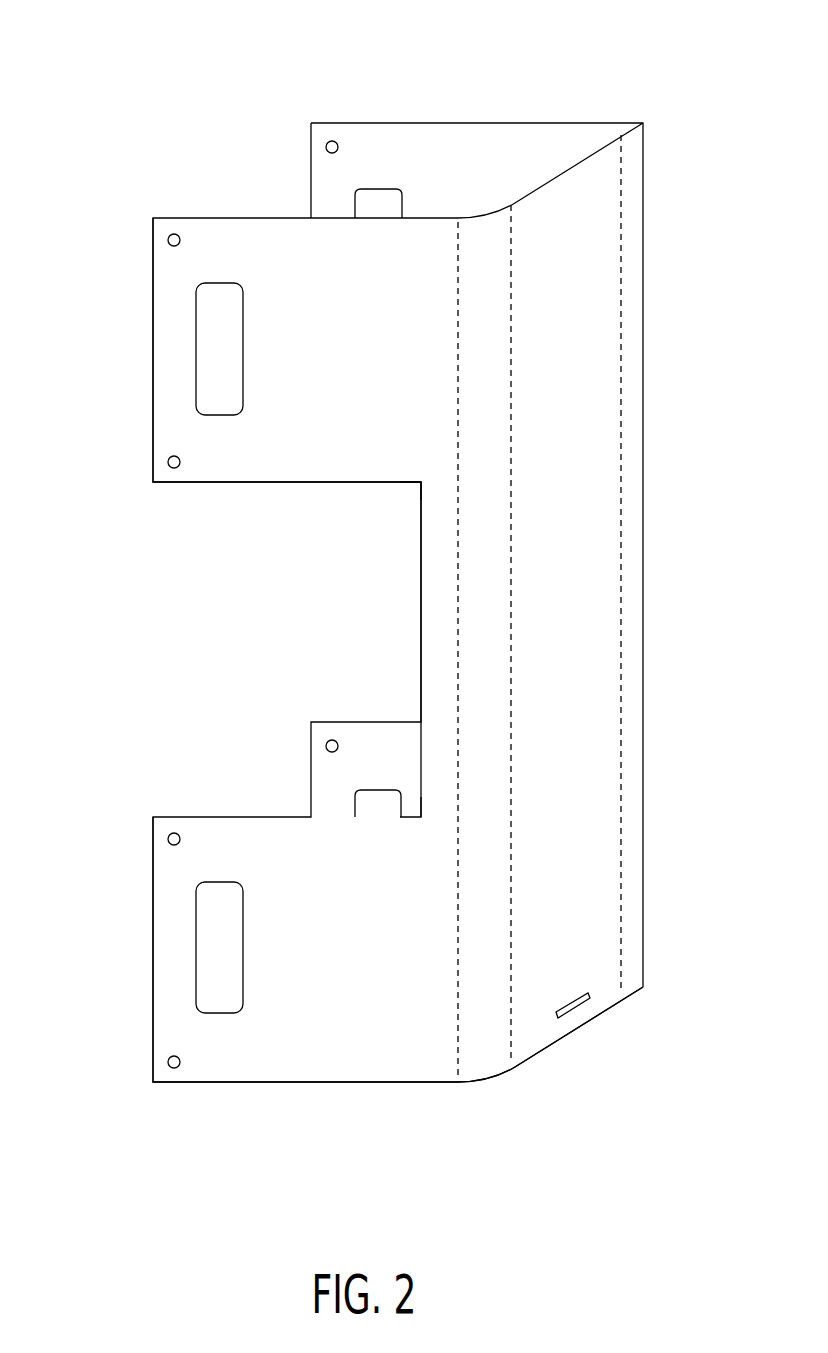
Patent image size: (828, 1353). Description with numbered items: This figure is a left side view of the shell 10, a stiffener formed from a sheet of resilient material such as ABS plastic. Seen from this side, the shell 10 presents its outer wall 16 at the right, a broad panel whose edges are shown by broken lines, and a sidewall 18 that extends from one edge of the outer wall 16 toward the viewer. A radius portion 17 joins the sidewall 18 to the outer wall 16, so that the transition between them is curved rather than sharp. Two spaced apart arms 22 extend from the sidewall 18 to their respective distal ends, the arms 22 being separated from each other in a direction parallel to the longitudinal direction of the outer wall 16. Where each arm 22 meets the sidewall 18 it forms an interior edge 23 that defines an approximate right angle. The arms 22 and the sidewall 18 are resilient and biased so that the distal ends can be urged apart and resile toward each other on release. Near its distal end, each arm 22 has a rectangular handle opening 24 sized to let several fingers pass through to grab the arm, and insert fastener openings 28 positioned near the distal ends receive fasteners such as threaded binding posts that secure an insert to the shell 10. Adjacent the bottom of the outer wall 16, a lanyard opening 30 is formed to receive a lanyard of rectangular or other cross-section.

The shell 10 is at (600, 118).
The outer wall 16 is at (583, 599).
The radius portion 17 is at (485, 1078).
The sidewall 18 is at (420, 634).
The arm 22 is at (334, 362).
The interior edge 23 is at (420, 484).
The handle opening 24 is at (221, 415).
The insert fastener opening 28 is at (168, 240).
The lanyard opening 30 is at (602, 1010).